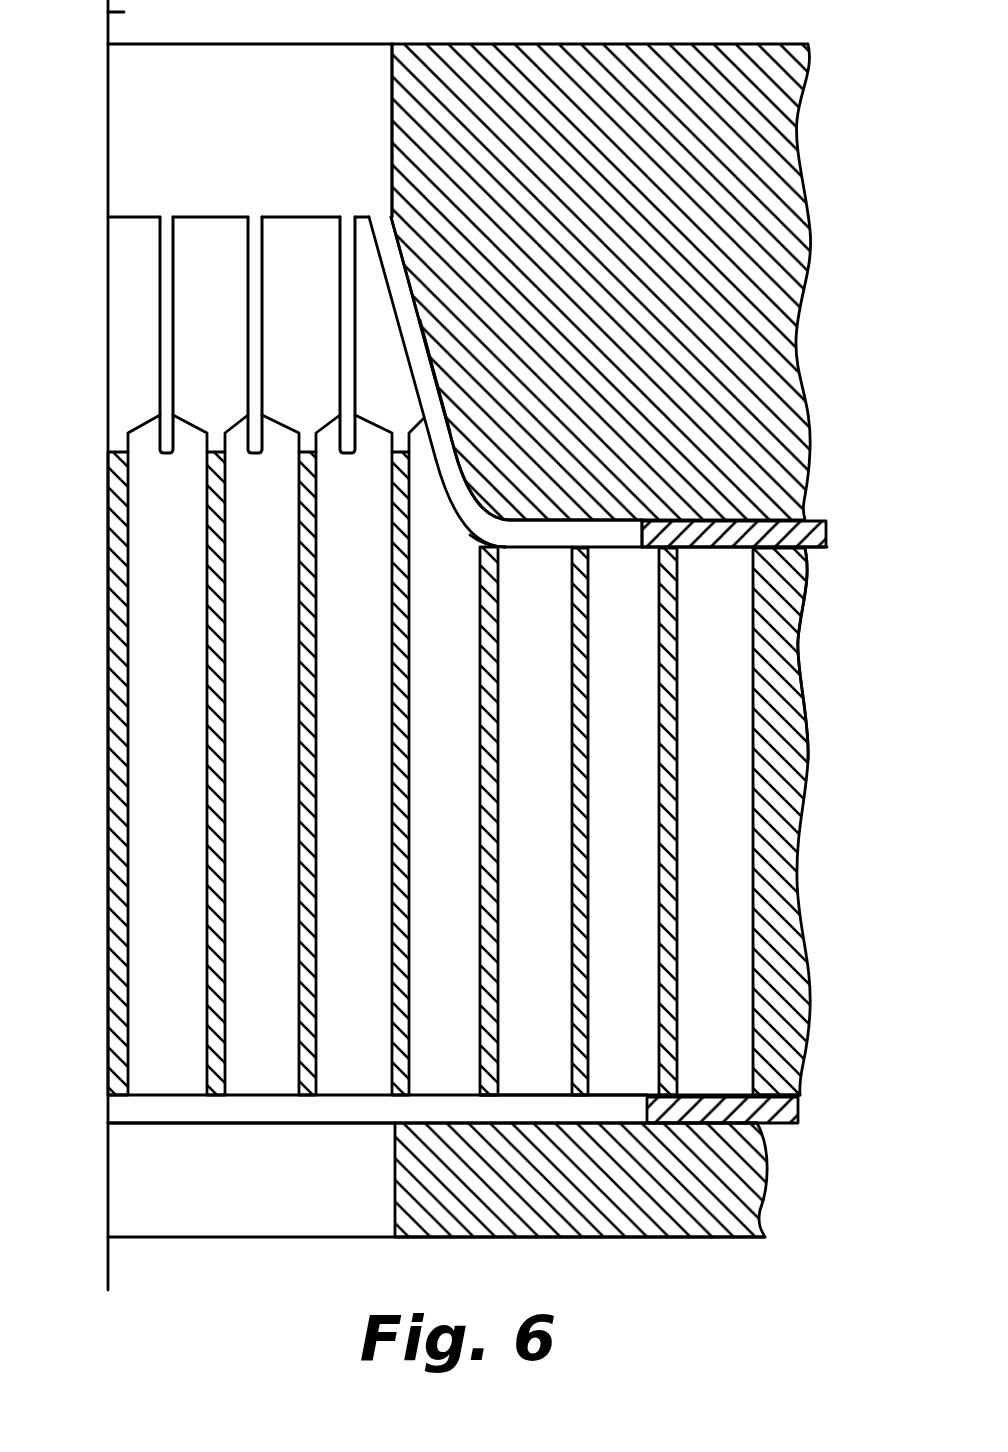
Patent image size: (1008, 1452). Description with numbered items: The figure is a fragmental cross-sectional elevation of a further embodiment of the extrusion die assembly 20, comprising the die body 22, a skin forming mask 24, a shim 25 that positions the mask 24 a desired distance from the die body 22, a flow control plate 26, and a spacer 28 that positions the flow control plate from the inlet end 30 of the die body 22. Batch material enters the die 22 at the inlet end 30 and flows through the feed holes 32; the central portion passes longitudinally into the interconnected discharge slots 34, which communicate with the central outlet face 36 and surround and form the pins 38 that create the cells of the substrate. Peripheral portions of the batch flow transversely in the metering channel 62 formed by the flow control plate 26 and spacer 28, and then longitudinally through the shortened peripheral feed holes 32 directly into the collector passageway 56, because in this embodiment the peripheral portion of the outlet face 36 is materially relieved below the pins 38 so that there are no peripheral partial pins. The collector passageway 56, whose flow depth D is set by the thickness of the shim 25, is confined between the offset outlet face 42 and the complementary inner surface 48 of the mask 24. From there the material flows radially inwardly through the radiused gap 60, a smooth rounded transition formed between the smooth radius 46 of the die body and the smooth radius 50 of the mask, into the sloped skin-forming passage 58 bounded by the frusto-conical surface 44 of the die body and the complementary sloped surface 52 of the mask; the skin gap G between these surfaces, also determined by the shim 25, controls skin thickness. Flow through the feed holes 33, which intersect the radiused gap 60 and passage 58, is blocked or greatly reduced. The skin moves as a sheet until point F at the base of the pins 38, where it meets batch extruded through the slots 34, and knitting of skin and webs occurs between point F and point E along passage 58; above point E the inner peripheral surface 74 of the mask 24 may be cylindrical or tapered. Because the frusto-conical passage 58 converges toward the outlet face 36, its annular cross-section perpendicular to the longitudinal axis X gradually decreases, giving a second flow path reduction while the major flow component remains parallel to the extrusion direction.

The extrusion die assembly 20 is at (806, 627).
The die body 22 is at (795, 771).
The skin forming mask 24 is at (652, 58).
The shim 25 is at (812, 536).
The flow control plate 26 is at (762, 1175).
The spacer 28 is at (790, 1112).
The inlet end 30 is at (258, 1100).
The feed holes 32 is at (192, 771).
The feed holes 33 is at (465, 692).
The discharge slots 34 is at (167, 217).
The central outlet face 36 is at (138, 217).
The pins 38 is at (145, 282).
The offset outlet face 42 is at (532, 545).
The sloped frusto-conical surface 44 is at (410, 362).
The smooth radius 46 is at (459, 510).
The inner surface 48 is at (588, 524).
The smooth radius 50 is at (494, 516).
The sloped frusto-conical surface 52 is at (430, 383).
The collector passageway 56 is at (607, 537).
The skin-forming passage 58 is at (406, 331).
The radiused gap 60 is at (478, 528).
The metering channel 62 is at (542, 1108).
The inner peripheral surface 74 is at (392, 130).
The point E is at (408, 292).
The point F is at (450, 407).
The skin gap G is at (380, 302).
The flow gap D is at (628, 468).
The longitudinal axis X is at (128, 14).